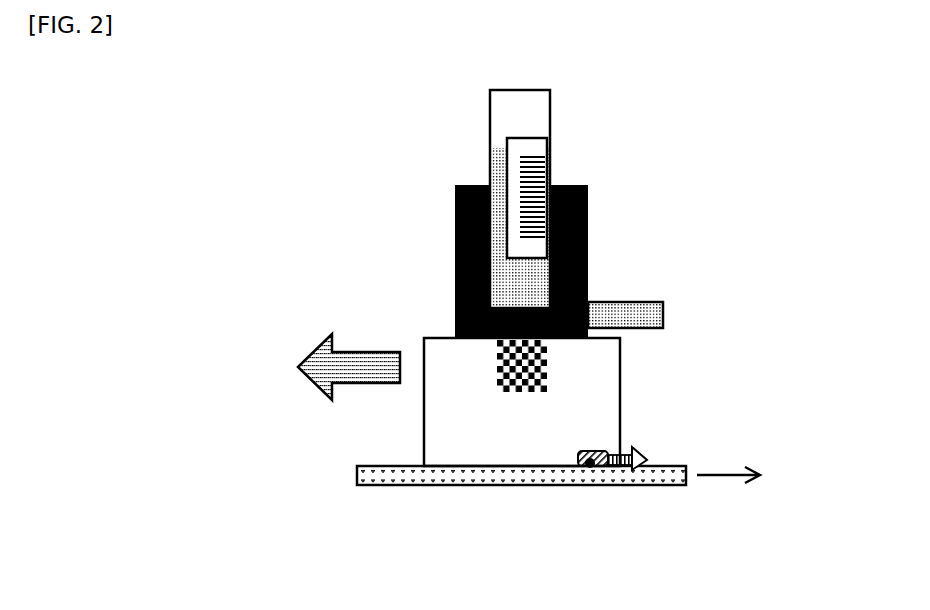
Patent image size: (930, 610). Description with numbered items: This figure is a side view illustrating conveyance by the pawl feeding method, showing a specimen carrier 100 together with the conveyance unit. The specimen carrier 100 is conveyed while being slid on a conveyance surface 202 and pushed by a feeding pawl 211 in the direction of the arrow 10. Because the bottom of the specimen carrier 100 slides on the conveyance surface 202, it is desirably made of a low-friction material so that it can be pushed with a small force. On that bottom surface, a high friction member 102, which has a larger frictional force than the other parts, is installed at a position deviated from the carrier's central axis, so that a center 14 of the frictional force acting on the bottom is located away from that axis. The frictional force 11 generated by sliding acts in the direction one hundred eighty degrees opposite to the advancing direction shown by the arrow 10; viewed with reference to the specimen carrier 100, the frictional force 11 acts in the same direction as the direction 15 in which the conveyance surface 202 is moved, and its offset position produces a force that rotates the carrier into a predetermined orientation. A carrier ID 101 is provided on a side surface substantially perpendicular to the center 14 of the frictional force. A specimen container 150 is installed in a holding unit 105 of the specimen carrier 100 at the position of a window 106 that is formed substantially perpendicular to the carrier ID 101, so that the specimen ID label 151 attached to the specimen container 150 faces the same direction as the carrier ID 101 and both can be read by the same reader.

The arrow 10 is at (322, 383).
The frictional force 11 is at (625, 468).
The center of the frictional force 14 is at (590, 463).
The direction in which the conveyance surface is moved 15 is at (730, 475).
The specimen carrier 100 is at (437, 337).
The carrier ID 101 is at (547, 372).
The high friction member 102 is at (592, 448).
The holding unit 105 is at (455, 227).
The window 106 is at (590, 260).
The specimen container 150 is at (550, 115).
The specimen ID label 151 is at (550, 173).
The conveyance surface 202 is at (483, 485).
The feeding pawl 211 is at (617, 302).